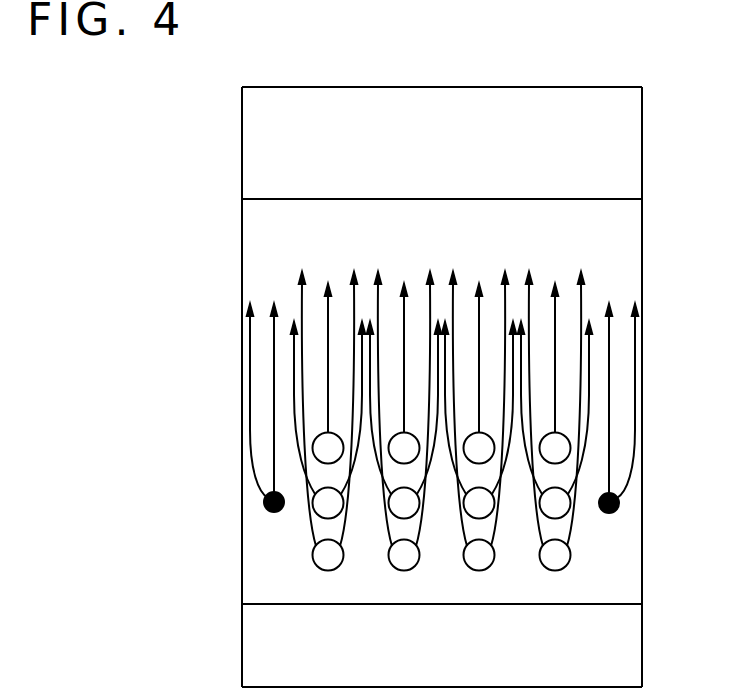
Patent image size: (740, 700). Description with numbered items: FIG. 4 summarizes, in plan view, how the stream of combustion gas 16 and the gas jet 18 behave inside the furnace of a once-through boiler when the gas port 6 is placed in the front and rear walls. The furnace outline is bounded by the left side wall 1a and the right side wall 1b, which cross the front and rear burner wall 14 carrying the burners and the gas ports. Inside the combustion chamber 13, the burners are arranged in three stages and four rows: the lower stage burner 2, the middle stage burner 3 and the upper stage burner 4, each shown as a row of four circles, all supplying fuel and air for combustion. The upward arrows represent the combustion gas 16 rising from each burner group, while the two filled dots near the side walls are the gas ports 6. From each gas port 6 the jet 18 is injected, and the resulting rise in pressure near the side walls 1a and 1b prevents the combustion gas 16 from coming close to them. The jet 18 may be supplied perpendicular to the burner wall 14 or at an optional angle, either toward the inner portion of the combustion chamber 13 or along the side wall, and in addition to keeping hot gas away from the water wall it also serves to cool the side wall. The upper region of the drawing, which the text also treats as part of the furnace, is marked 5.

The left side wall 1a is at (242, 380).
The right side wall 1b is at (642, 377).
The lower stage burner 2 is at (312, 555).
The middle stage burner 3 is at (310, 493).
The upper stage burner 4 is at (308, 447).
The upper plate 5 is at (627, 150).
The gas port 6 is at (265, 503).
The combustion chamber 13 is at (293, 233).
The burner wall 14 is at (618, 570).
The combustion gas 16 is at (302, 295).
The jet 18 is at (273, 363).